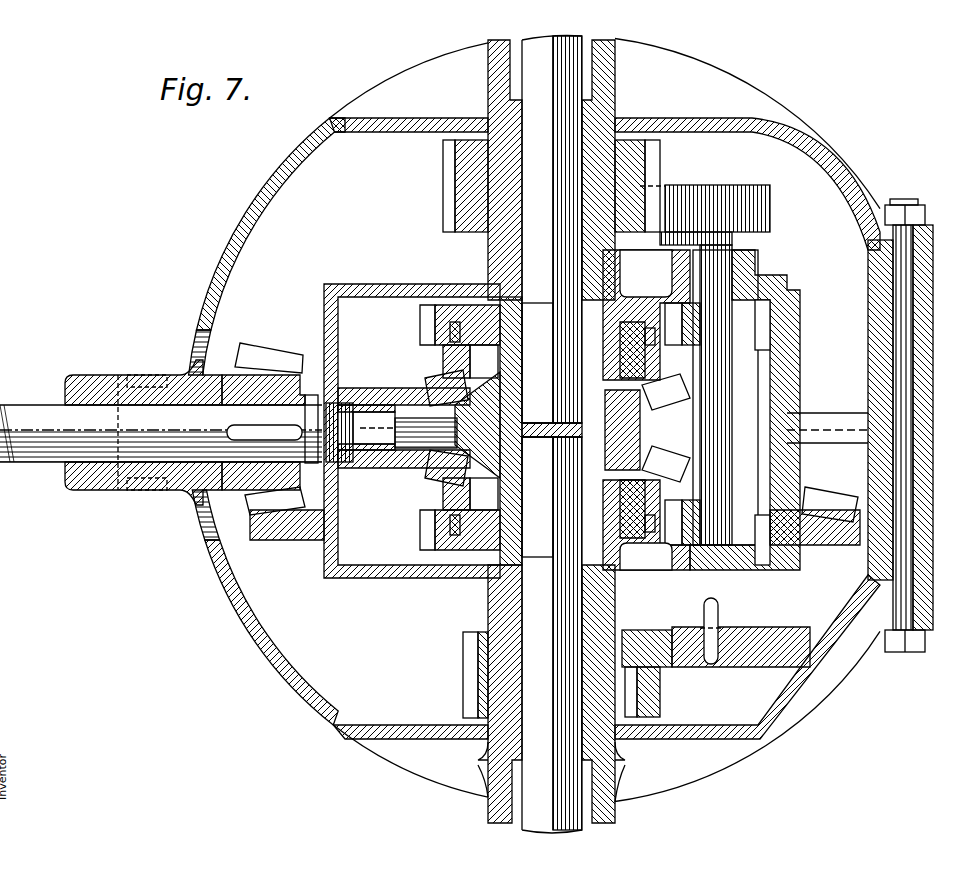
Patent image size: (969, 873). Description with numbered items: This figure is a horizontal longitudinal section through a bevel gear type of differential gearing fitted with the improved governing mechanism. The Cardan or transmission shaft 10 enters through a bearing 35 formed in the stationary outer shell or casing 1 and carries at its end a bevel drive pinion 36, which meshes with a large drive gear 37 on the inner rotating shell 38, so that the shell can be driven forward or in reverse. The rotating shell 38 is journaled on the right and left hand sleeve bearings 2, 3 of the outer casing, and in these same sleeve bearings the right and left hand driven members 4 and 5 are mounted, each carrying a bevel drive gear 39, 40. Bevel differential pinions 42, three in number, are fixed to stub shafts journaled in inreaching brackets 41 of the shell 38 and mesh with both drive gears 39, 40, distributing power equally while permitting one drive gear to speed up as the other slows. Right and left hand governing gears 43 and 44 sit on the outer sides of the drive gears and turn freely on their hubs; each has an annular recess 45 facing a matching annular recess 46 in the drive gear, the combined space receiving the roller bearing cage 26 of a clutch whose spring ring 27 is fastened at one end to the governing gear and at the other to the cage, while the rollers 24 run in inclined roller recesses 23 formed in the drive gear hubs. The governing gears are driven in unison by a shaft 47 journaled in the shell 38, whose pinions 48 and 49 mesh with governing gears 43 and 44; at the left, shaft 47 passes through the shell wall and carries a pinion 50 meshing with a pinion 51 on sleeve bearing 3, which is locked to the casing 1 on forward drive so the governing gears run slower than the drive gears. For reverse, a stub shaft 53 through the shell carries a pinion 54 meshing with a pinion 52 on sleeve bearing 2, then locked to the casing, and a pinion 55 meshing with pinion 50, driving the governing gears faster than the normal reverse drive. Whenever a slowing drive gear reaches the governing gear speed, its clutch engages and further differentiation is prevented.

The stationary outer shell or casing 1 is at (842, 152).
The right hand sleeve bearing 2 is at (518, 212).
The left hand sleeve bearing 3 is at (517, 685).
The right hand driven member 4 is at (528, 53).
The left hand driven member 5 is at (570, 800).
The Cardan or transmission shaft 10 is at (24, 405).
The inclined roller recesses 23 is at (493, 352).
The rollers 24 is at (446, 356).
The roller bearing cage 26 is at (468, 305).
The spring ring 27 is at (440, 326).
The bearing 35 is at (113, 372).
The bevel drive pinion 36 is at (258, 352).
The large drive gear 37 is at (296, 542).
The inner rotating shell 38 is at (380, 292).
The right hand bevel drive gear 39 is at (445, 380).
The left hand bevel drive gear 40 is at (446, 500).
The inreaching brackets 41 is at (372, 470).
The bevel differential pinions 42 is at (420, 456).
The right hand governing gear 43 is at (452, 305).
The left hand governing gear 44 is at (450, 553).
The annular recess 45 is at (640, 320).
The annular recess 46 is at (645, 452).
The shaft 47 is at (732, 415).
The pinion 48 is at (768, 324).
The pinion 49 is at (775, 540).
The pinion 50 is at (795, 638).
The pinion 51 is at (640, 700).
The pinion 52 is at (665, 178).
The stub shaft 53 is at (690, 448).
The pinion 54 is at (715, 196).
The pinion 55 is at (660, 662).